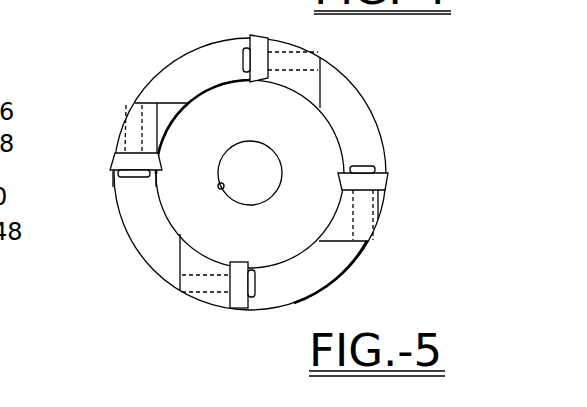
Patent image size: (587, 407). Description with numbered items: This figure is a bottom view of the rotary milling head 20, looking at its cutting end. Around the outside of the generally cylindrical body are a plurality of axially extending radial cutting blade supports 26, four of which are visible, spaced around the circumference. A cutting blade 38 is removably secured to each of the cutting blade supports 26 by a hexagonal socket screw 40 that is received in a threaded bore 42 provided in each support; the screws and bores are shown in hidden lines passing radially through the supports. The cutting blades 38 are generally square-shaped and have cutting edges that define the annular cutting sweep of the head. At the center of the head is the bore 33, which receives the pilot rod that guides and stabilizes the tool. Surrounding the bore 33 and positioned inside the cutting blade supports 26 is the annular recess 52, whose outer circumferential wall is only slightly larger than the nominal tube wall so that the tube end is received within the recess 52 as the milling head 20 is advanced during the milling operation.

The rotary milling head 20 is at (160, 60).
The cutting blade support 26 is at (285, 35).
The bore 33 is at (219, 187).
The cutting blade 38 is at (250, 37).
The hexagonal socket screw 40 is at (122, 181).
The threaded bore 42 is at (126, 117).
The annular recess 52 is at (327, 136).